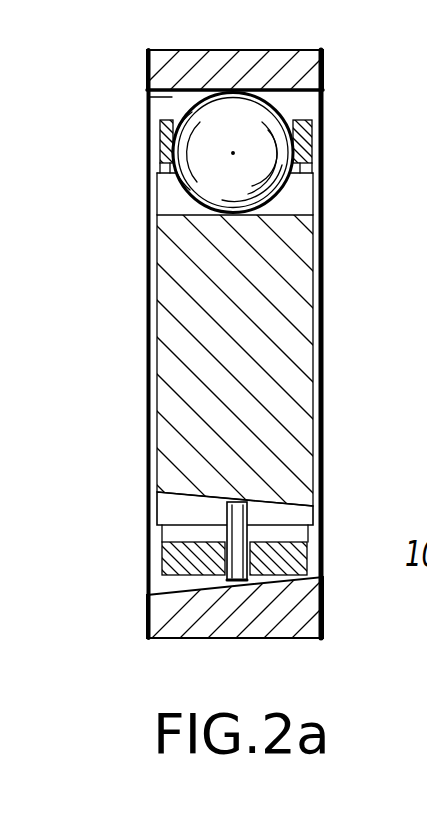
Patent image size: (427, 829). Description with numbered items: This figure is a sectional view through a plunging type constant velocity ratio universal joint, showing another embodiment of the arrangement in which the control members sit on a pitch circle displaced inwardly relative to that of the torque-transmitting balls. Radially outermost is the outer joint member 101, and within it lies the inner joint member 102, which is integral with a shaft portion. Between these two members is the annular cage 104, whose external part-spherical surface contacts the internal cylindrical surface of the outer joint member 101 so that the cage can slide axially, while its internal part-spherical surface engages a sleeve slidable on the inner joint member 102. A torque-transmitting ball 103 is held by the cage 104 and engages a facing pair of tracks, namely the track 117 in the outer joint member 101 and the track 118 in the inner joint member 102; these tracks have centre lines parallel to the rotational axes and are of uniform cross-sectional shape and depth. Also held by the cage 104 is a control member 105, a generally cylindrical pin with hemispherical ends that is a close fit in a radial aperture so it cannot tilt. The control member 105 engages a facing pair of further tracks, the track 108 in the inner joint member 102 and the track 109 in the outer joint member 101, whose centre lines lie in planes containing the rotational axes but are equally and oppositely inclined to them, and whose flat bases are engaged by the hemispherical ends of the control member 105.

The outer joint member 101 is at (312, 77).
The inner joint member 102 is at (297, 298).
The torque-transmitting balls 103 is at (257, 122).
The cage 104 is at (167, 548).
The control member 105 is at (240, 583).
The further track 108 is at (285, 515).
The further track 109 is at (257, 580).
The track 117 is at (163, 100).
The track 118 is at (168, 197).